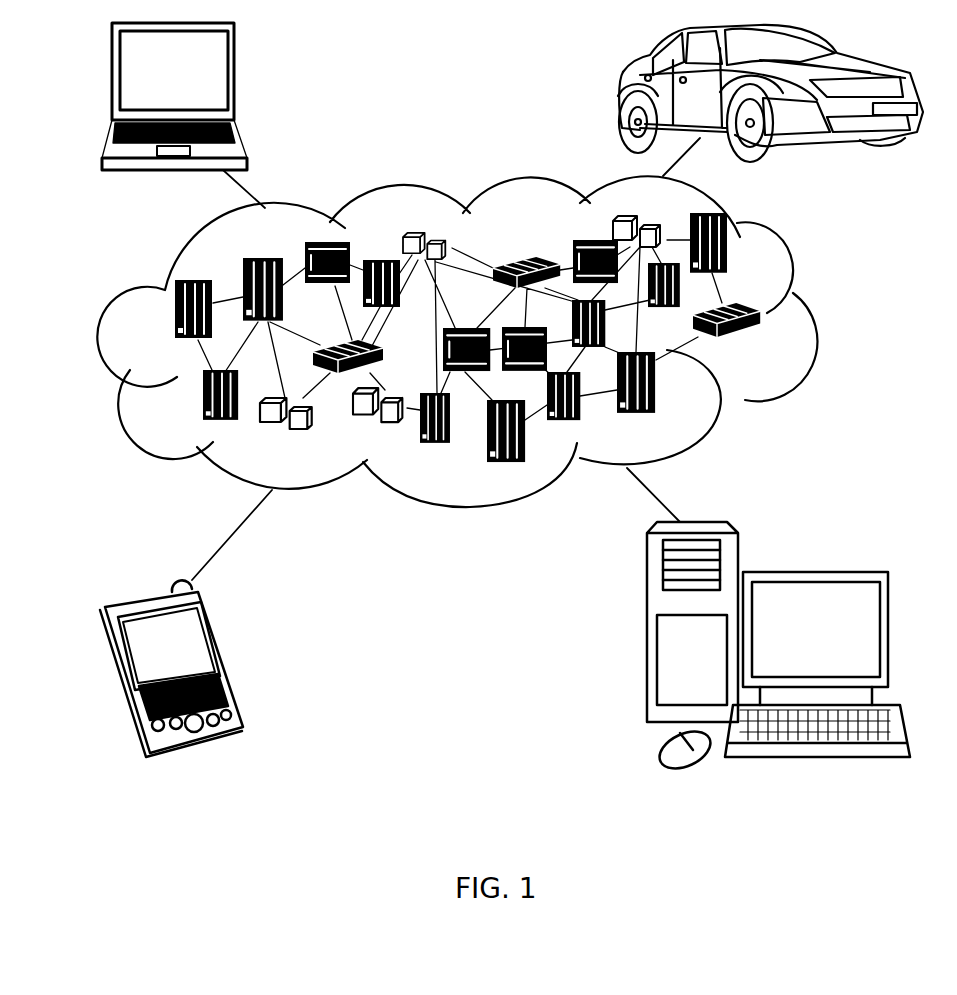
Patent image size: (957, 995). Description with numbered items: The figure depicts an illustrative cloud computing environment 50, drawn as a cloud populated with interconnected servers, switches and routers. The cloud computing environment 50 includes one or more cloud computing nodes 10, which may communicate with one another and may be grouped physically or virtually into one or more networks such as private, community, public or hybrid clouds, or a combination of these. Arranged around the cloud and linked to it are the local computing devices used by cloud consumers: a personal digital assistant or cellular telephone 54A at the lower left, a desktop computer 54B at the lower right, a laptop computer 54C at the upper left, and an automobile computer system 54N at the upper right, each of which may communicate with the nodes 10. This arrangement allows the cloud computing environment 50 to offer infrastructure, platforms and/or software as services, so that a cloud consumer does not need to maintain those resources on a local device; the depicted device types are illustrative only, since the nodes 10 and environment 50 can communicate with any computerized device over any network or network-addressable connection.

The cloud computing nodes 10 is at (762, 345).
The cloud computing environment 50 is at (817, 317).
The personal digital assistant (PDA) or cellular telephone 54A is at (227, 657).
The desktop computer 54B is at (812, 572).
The laptop computer 54C is at (235, 81).
The automobile computer system 54N is at (620, 90).